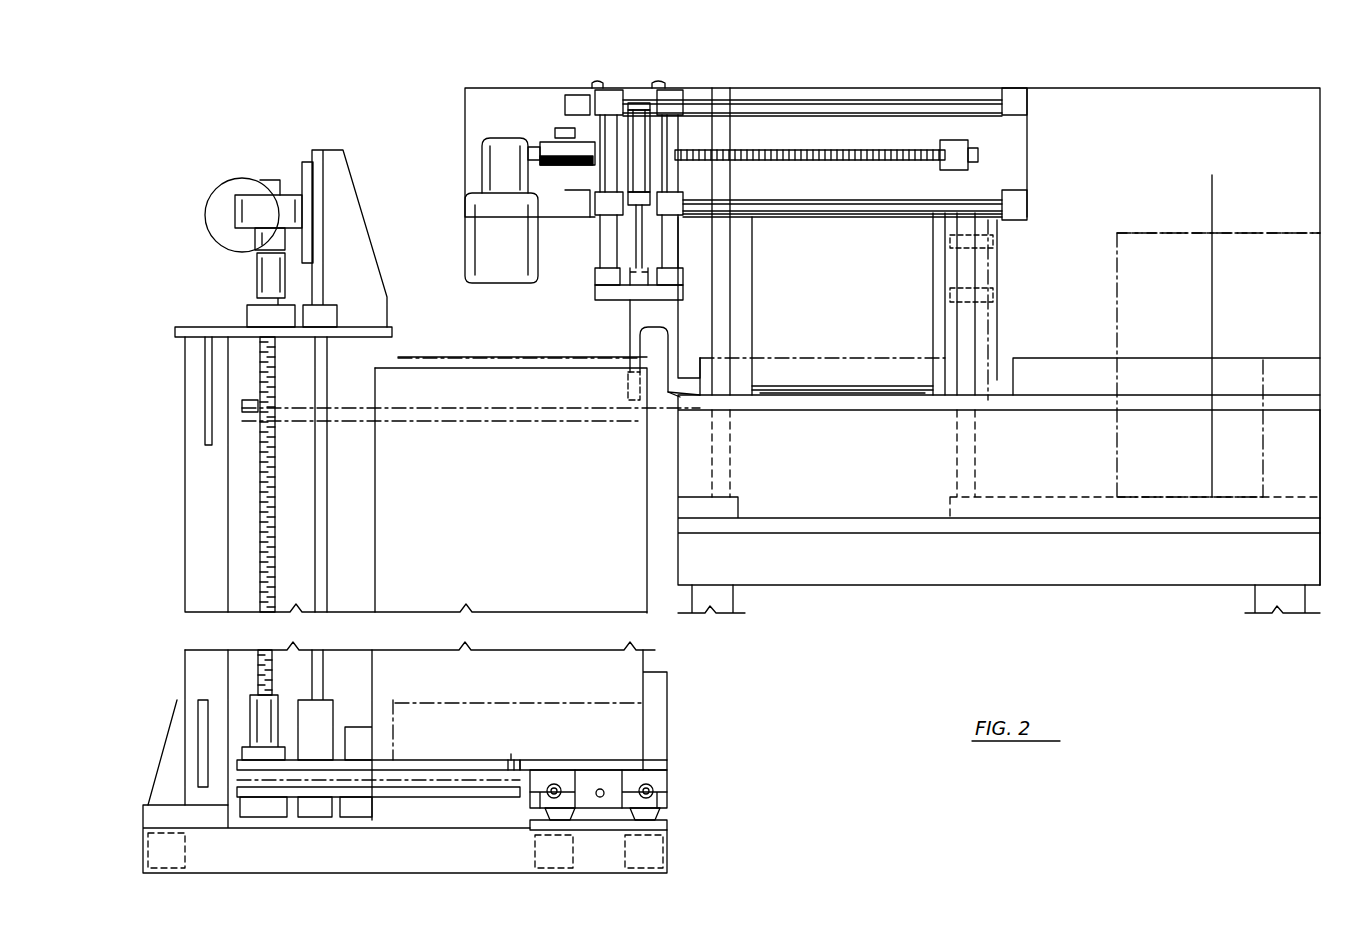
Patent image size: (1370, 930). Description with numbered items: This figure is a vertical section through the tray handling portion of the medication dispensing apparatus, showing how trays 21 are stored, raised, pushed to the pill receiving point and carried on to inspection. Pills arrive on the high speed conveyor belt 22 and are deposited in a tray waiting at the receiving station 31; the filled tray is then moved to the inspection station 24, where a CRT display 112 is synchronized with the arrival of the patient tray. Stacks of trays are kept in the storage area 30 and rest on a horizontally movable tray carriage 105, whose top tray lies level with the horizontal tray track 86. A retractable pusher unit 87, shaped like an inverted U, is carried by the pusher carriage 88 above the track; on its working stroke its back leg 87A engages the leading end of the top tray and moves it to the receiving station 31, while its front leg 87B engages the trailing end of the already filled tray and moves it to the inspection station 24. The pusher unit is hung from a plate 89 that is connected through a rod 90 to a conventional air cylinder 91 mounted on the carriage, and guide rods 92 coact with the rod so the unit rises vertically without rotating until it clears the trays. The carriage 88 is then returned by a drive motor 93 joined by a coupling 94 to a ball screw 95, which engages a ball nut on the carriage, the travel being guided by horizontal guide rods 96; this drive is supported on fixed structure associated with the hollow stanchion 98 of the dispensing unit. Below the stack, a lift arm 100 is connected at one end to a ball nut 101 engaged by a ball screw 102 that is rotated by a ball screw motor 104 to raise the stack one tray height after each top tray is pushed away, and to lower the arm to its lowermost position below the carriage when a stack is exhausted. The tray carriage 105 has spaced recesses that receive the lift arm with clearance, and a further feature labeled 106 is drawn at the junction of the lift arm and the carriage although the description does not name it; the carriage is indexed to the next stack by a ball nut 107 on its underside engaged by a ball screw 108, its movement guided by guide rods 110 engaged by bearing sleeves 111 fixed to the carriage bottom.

The tray 21 is at (488, 357).
The conveyor belt 22 is at (848, 244).
The inspection station 24 is at (1130, 425).
The storage area 30 is at (205, 525).
The receiving station 31 is at (838, 415).
The horizontal tray track 86 is at (1078, 410).
The pusher unit 87 is at (1012, 246).
The back leg 87A is at (630, 352).
The front leg 87B is at (668, 398).
The pusher carriage 88 is at (626, 80).
The plate 89 is at (596, 292).
The rod 90 is at (632, 236).
The air cylinder 91 is at (640, 152).
The guide rods 92 is at (598, 256).
The drive motor 93 is at (486, 160).
The coupling 94 is at (548, 147).
The ball screw 95 is at (828, 150).
The horizontal guide rods 96 is at (870, 103).
The stanchion 98 is at (186, 440).
The lift arm 100 is at (495, 422).
The ball nut 101 is at (258, 375).
The ball screw 102 is at (273, 512).
The ball screw motor 104 is at (222, 205).
The tray carriage 105 is at (668, 768).
The latch 106 is at (511, 758).
The ball nut 107 is at (590, 780).
The ball screw 108 is at (600, 800).
The guide rods 110 is at (545, 791).
The bearing sleeves 111 is at (558, 785).
The CRT display 112 is at (1262, 240).